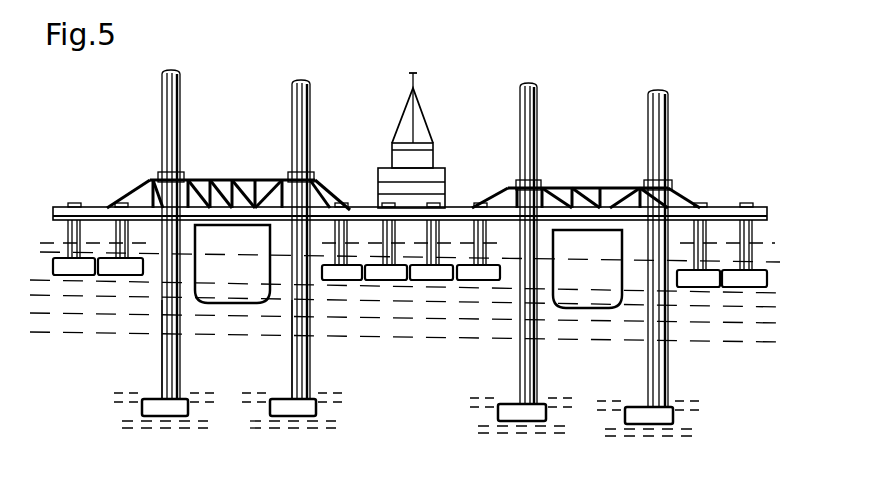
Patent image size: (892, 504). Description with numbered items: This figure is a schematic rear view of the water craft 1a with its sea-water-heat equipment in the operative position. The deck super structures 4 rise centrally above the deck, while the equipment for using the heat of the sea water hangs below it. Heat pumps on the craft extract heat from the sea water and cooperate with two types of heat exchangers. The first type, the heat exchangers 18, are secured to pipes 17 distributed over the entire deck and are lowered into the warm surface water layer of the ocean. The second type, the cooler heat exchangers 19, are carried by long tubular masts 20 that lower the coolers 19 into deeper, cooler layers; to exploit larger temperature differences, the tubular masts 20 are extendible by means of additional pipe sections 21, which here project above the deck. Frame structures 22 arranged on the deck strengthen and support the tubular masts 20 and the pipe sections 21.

The water craft 1a is at (480, 82).
The deck super structures 4 is at (427, 158).
The pipes 17 is at (113, 230).
The heat exchangers 18 is at (112, 277).
The cooler heat exchangers 19 is at (148, 408).
The tubular masts 20 is at (293, 377).
The additional pipe sections 21 is at (163, 88).
The frame structures 22 is at (242, 193).